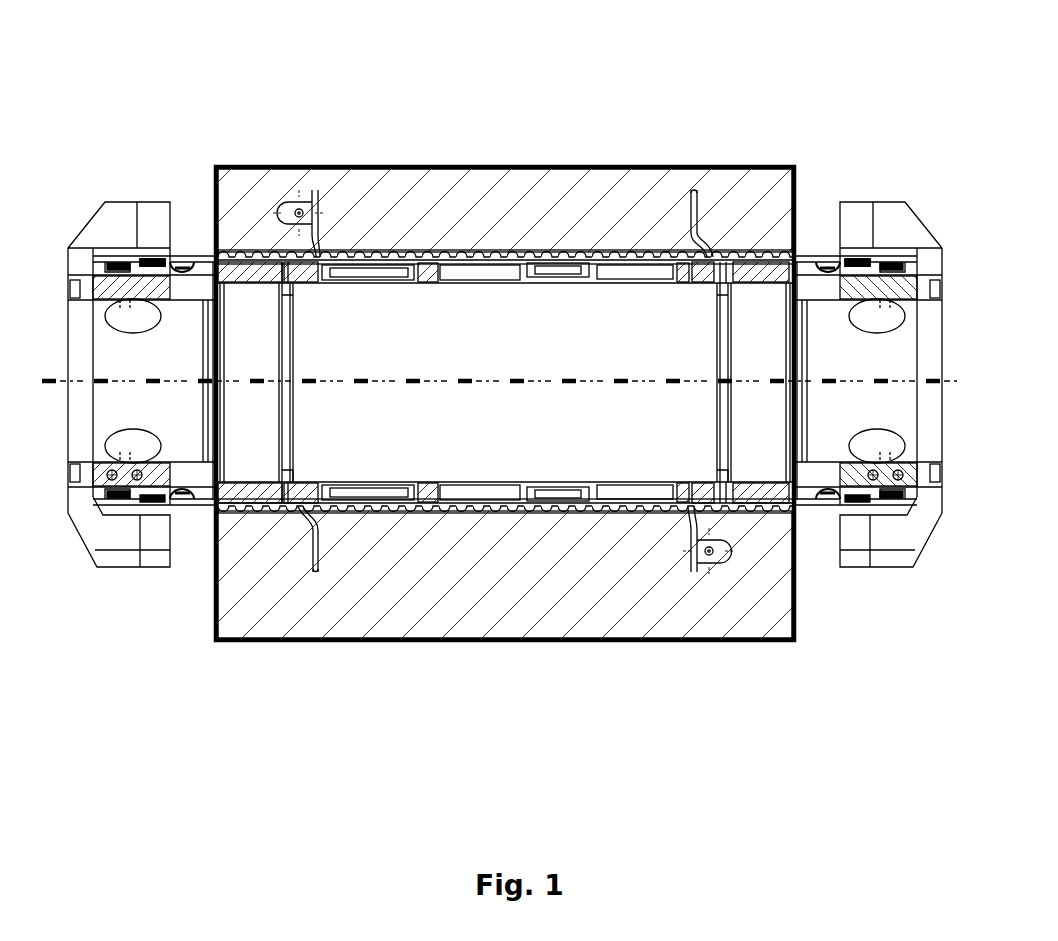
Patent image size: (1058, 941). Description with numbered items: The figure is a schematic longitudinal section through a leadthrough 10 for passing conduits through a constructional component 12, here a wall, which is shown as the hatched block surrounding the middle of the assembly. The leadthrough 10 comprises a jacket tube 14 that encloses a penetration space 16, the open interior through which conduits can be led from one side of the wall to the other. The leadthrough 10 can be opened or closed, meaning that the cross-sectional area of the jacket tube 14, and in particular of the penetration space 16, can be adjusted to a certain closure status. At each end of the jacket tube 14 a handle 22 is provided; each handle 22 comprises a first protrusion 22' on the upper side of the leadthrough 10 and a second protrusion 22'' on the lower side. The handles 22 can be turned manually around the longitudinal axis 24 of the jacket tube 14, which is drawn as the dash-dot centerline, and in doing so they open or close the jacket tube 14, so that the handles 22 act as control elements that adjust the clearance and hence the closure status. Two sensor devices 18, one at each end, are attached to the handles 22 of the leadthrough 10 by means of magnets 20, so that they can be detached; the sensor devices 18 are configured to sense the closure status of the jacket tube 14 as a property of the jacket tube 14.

The leadthrough 10 is at (427, 533).
The constructional component 12 is at (590, 193).
The jacket tube 14 is at (370, 300).
The penetration space 16 is at (585, 433).
The sensor device 18 is at (112, 228).
The magnet 20 is at (167, 202).
The handle 22 is at (505, 154).
The first protrusion 22' is at (491, 183).
The second protrusion 22'' is at (502, 581).
The longitudinal axis 24 is at (953, 400).